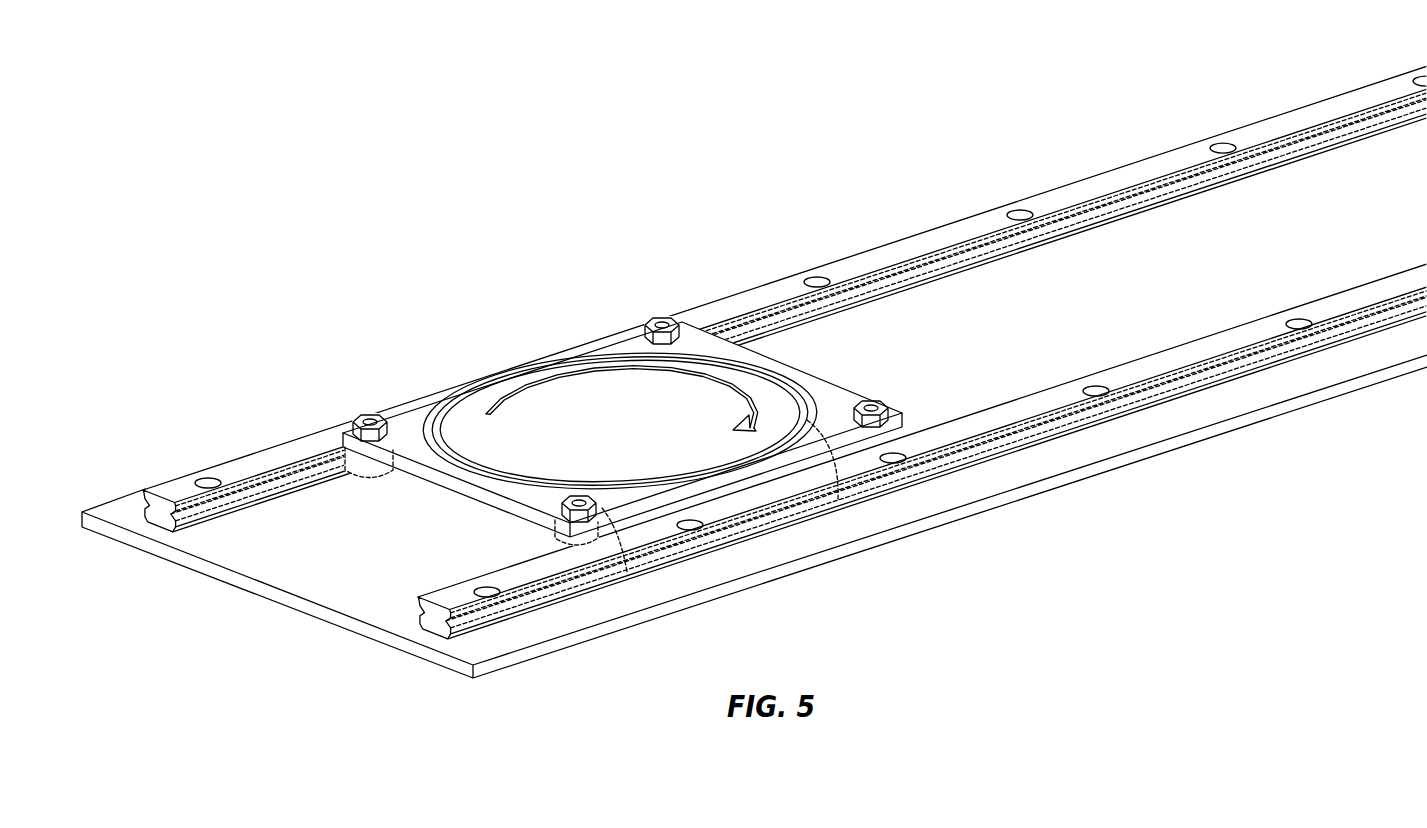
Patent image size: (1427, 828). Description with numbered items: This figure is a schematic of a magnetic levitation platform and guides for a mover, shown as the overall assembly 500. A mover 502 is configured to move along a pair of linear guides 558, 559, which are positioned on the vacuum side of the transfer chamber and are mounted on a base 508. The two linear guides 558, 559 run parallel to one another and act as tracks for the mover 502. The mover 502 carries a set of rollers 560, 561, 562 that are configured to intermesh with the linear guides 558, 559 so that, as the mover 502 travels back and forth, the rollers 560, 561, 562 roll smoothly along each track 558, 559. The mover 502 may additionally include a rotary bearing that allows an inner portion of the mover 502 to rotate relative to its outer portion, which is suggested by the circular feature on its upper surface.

The linear motion stage assembly 500 is at (378, 186).
The mover 502 is at (808, 425).
The base plate 508 is at (1272, 407).
The linear guide 558 is at (1153, 397).
The linear guide 559 is at (1043, 190).
The roller 560 is at (884, 425).
The roller 561 is at (597, 512).
The roller 562 is at (660, 316).